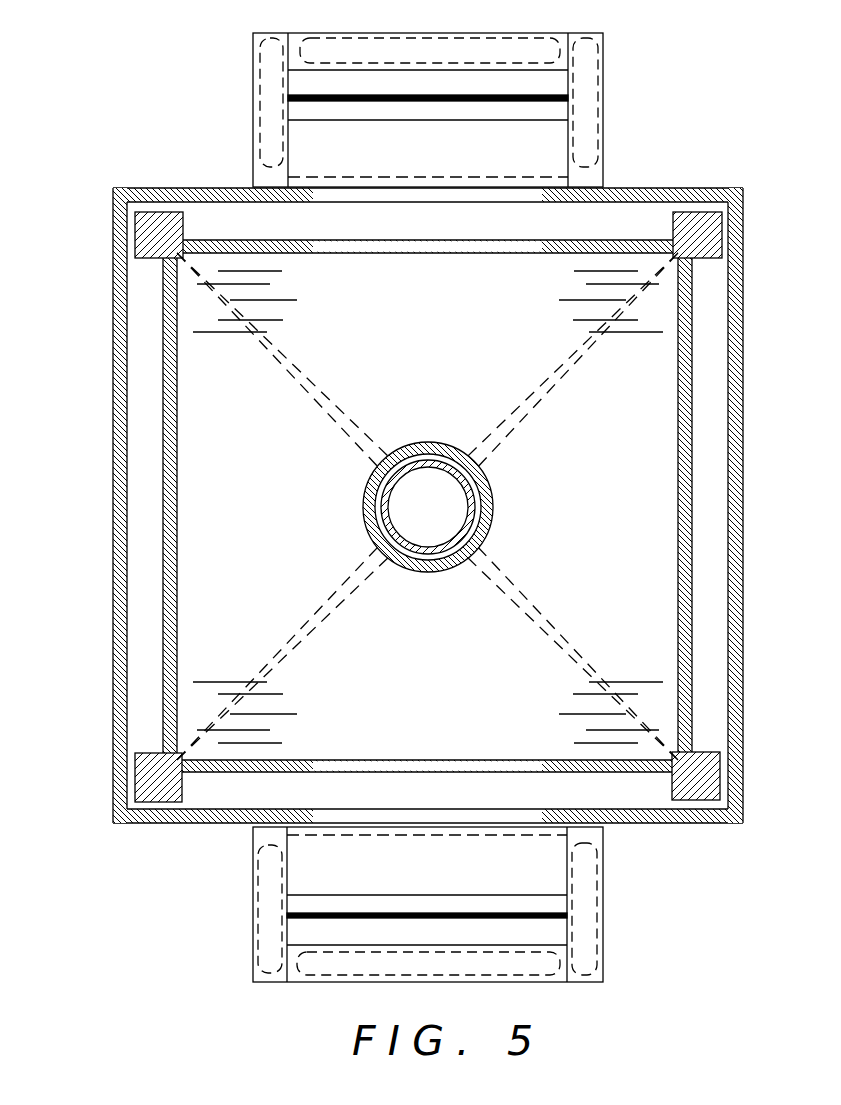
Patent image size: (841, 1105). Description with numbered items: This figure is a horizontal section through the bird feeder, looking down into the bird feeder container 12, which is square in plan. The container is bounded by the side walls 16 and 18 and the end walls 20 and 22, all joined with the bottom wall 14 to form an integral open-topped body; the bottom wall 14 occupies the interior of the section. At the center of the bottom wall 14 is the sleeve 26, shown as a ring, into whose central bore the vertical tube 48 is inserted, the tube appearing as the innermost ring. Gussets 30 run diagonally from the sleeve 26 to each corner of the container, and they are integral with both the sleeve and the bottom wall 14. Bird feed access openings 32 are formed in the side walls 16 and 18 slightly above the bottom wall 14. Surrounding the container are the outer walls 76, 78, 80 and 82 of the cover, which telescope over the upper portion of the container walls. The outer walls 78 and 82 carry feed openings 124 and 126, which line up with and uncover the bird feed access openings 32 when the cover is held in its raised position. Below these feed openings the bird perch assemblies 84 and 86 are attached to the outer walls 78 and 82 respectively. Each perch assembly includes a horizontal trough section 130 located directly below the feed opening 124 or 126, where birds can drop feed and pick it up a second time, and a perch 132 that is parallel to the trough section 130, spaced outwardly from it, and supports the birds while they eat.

The bird feeder container 12 is at (421, 512).
The bottom wall 14 is at (421, 512).
The side wall 16 is at (297, 770).
The side wall 18 is at (592, 245).
The end wall 20 is at (679, 403).
The end wall 22 is at (170, 383).
The sleeve 26 is at (467, 507).
The gussets 30 is at (545, 372).
The bird feed access openings 32 is at (412, 245).
The vertical tube 48 is at (472, 500).
The outer wall 76 is at (112, 533).
The outer wall 78 is at (213, 825).
The outer wall 80 is at (745, 661).
The outer wall 82 is at (239, 195).
The bird perch assembly 84 is at (583, 923).
The bird perch assembly 86 is at (603, 86).
The feed opening 124 is at (530, 823).
The feed opening 126 is at (615, 197).
The trough section 130 is at (300, 147).
The perch 132 is at (277, 953).